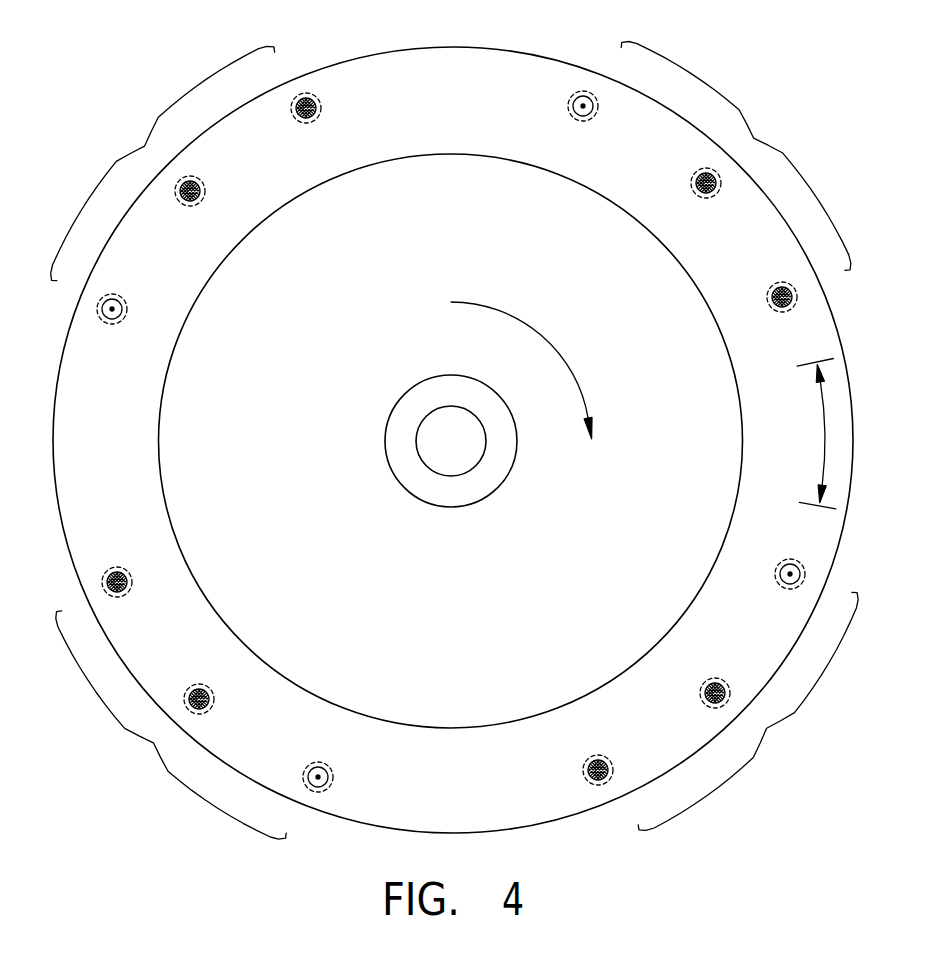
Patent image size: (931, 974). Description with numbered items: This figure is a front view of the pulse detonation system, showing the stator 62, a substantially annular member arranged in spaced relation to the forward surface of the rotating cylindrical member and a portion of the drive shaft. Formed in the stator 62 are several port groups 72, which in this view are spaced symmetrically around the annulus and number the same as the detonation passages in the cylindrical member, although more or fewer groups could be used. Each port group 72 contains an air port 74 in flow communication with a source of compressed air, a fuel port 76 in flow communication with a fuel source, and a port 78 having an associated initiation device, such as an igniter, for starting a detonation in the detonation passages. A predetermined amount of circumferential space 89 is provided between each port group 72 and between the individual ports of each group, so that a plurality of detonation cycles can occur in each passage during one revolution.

The stator 62 is at (383, 37).
The port group 72 is at (141, 145).
The air port 74 is at (113, 296).
The fuel port 76 is at (205, 195).
The port 78 is at (311, 122).
The circumferential space 89 is at (822, 430).